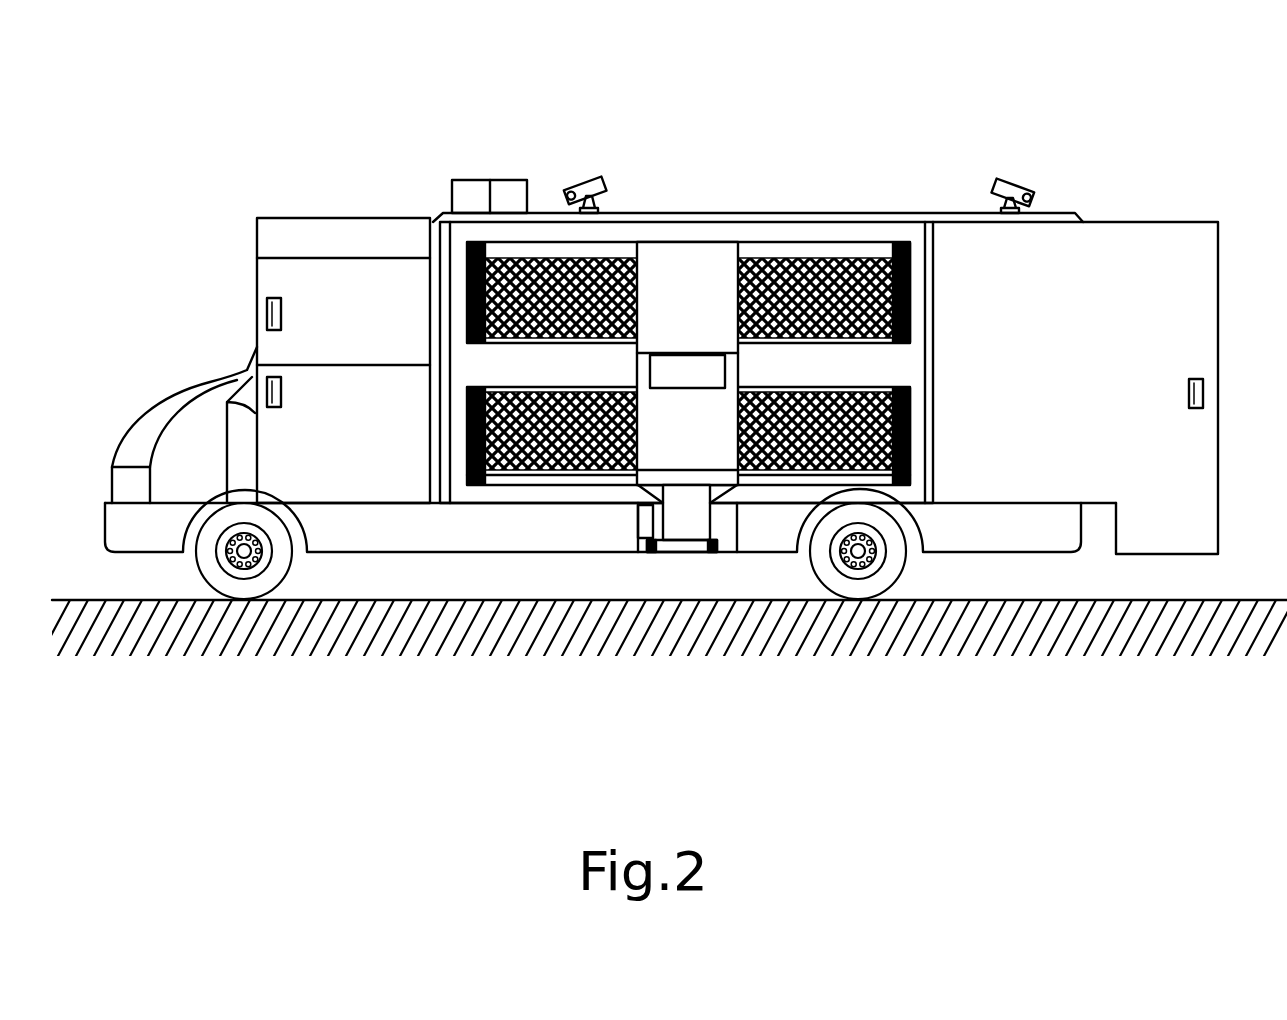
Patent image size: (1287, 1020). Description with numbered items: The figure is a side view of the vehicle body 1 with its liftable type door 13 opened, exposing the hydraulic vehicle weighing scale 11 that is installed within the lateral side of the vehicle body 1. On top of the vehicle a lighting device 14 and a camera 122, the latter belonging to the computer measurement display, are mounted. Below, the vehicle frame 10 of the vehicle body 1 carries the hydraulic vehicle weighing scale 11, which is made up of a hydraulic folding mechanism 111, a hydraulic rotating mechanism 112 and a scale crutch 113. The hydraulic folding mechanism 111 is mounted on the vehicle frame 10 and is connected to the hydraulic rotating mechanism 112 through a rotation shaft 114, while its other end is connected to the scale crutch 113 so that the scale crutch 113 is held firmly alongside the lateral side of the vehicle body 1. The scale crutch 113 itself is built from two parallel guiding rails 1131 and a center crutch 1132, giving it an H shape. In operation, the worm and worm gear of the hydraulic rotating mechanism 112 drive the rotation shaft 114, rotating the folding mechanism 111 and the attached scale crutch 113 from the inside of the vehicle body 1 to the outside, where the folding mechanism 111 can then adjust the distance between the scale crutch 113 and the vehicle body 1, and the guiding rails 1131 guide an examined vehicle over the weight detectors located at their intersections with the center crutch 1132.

The vehicle body 1 is at (200, 430).
The vehicle frame 10 is at (405, 528).
The hydraulic vehicle weighing scale 11 is at (782, 210).
The hydraulic folding mechanism 111 is at (682, 518).
The hydraulic rotating mechanism 112 is at (655, 527).
The scale crutch 113 is at (627, 243).
The guiding rails 1131 is at (797, 287).
The center crutch 1132 is at (707, 258).
The rotation shaft 114 is at (677, 543).
The camera 122 is at (600, 177).
The liftable type door 13 is at (362, 230).
The lighting device 14 is at (476, 192).